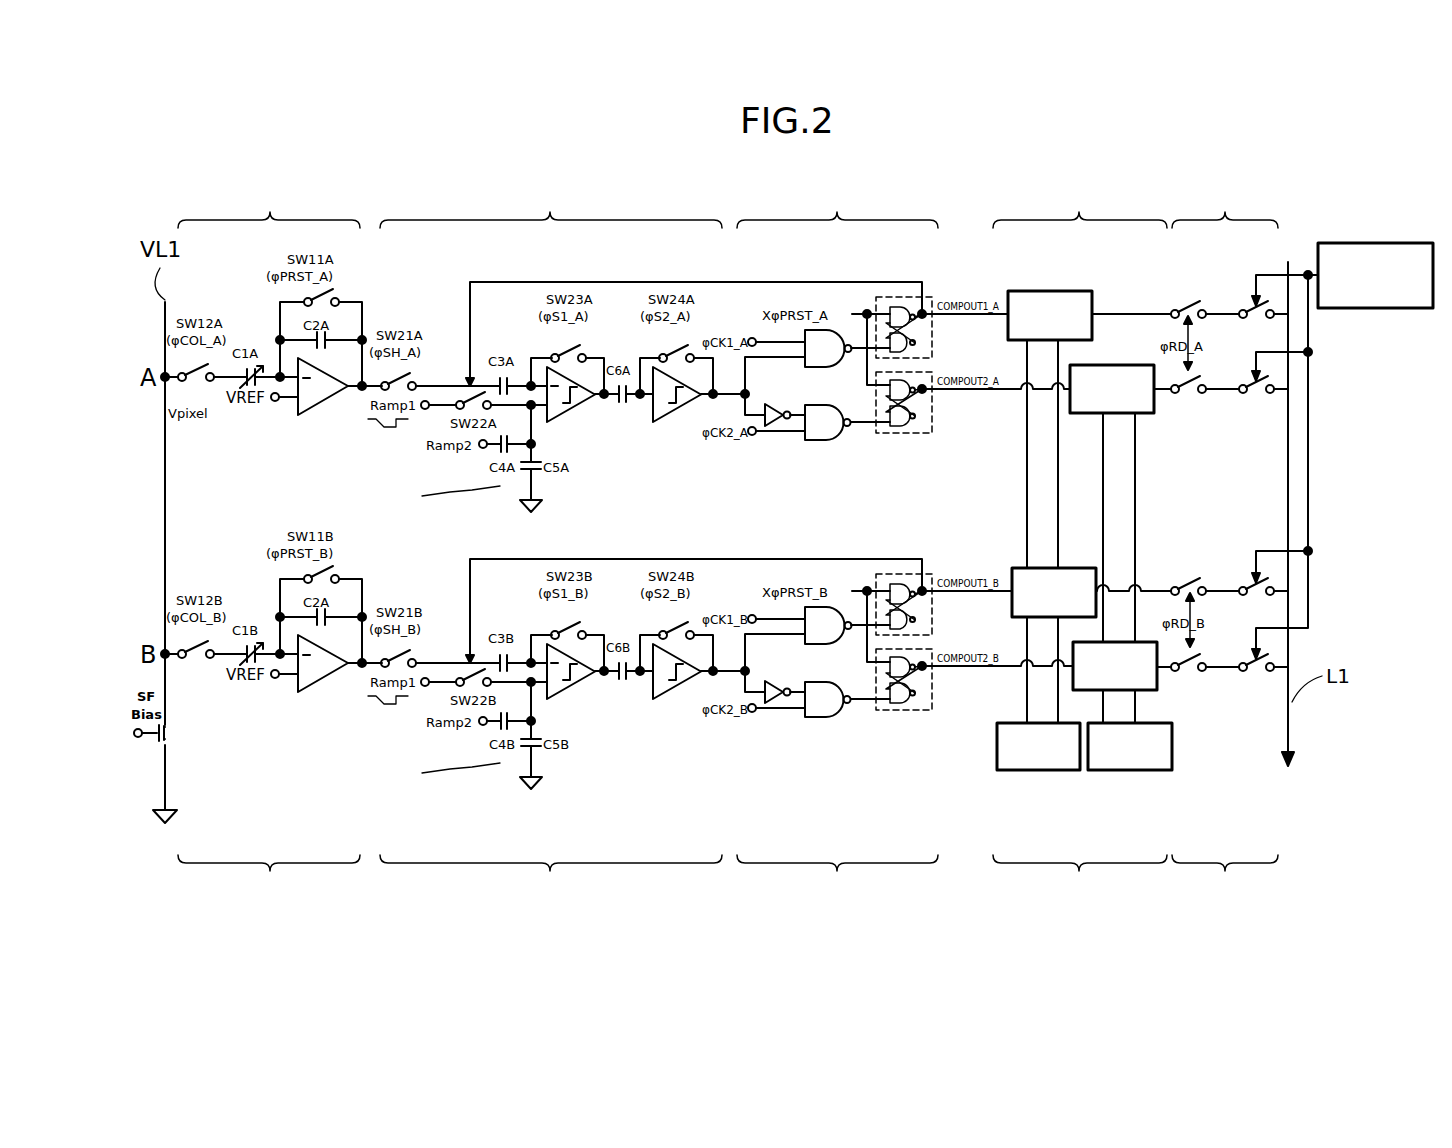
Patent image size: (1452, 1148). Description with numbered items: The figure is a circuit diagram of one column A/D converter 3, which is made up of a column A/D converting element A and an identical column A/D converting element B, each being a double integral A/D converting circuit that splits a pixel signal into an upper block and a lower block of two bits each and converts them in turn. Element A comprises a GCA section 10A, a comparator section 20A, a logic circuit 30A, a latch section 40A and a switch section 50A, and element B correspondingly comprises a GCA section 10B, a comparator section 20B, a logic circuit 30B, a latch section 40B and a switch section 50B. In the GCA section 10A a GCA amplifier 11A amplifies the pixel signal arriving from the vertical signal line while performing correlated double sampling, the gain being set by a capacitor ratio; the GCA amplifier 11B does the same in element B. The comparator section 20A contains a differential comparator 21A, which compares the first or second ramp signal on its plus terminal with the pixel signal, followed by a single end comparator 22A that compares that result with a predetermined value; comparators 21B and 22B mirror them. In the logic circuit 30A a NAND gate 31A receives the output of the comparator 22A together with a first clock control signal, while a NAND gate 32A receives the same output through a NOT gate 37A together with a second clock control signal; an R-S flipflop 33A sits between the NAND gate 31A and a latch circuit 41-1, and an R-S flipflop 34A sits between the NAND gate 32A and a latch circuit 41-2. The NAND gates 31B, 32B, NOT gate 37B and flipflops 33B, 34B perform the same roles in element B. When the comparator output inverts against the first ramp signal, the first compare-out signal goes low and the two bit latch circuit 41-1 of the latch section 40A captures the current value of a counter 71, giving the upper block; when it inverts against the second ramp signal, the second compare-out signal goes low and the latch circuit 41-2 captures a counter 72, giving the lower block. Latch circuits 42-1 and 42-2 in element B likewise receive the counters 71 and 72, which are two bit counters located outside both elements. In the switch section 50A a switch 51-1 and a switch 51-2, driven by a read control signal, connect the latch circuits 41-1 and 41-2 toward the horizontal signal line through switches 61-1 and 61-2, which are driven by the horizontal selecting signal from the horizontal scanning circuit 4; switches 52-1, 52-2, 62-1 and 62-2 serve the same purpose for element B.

The column A/D converter 3 is at (742, 177).
The horizontal scanning circuit 4 is at (1368, 243).
The GCA section 10A is at (269, 205).
The GCA section 10B is at (269, 878).
The comparator section 20A is at (551, 205).
The comparator section 20B is at (551, 878).
The logic circuit 30A is at (837, 205).
The logic circuit 30B is at (837, 878).
The latch section 40A is at (1080, 205).
The latch section 40B is at (1080, 878).
The switch section 50A is at (1225, 205).
The switch section 50B is at (1225, 878).
The GCA amplifier 11A is at (318, 417).
The GCA amplifier 11B is at (325, 688).
The comparator 21A is at (578, 422).
The comparator 21B is at (591, 687).
The comparator 22A is at (667, 424).
The comparator 22B is at (680, 698).
The NAND gate 31A is at (818, 368).
The NAND gate 31B is at (847, 642).
The NAND gate 32A is at (818, 441).
The NAND gate 32B is at (847, 717).
The R-S flipflop 33A is at (908, 296).
The R-S flipflop 33B is at (926, 582).
The R-S flipflop 34A is at (905, 434).
The R-S flipflop 34B is at (928, 706).
The NOT gate 37A is at (771, 404).
The NOT gate 37B is at (777, 668).
The latch circuit 41-1 is at (1022, 291).
The latch circuit 41-2 is at (1092, 365).
The latch circuit 42-1 is at (1022, 568).
The latch circuit 42-2 is at (1152, 690).
The switch 51-1 is at (1186, 301).
The switch 51-2 is at (1190, 400).
The switch 52-1 is at (1188, 578).
The switch 52-2 is at (1190, 676).
The switch 61-1 is at (1254, 301).
The switch 61-2 is at (1257, 400).
The switch 62-1 is at (1255, 578).
The switch 62-2 is at (1258, 654).
The counter 71 is at (1040, 770).
The counter 72 is at (1122, 770).